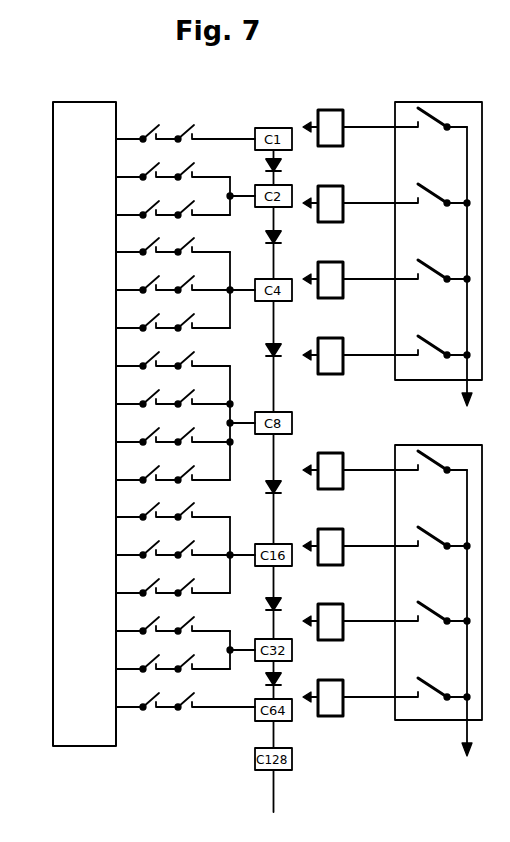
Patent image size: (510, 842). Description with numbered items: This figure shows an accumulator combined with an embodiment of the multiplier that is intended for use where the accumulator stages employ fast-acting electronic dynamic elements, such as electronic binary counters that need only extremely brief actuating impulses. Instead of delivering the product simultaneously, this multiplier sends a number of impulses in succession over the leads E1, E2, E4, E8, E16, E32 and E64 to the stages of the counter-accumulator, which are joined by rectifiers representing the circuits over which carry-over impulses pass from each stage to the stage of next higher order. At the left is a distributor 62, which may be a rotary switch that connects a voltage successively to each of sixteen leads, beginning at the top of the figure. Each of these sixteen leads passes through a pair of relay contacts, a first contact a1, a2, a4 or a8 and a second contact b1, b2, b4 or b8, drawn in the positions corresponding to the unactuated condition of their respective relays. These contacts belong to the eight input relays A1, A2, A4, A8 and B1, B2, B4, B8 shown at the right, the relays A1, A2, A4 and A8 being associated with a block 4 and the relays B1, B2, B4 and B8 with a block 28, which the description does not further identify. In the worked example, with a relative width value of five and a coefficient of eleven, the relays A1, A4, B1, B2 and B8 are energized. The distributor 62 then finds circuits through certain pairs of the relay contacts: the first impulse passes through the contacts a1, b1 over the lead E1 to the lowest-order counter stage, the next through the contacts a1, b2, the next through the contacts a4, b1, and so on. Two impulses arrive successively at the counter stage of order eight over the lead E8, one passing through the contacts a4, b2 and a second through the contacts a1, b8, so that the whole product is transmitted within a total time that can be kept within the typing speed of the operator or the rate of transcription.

The distributor 62 is at (85, 432).
The first switch group (A lines) 4 is at (452, 102).
The second switch group (B lines) 28 is at (465, 445).
The lead E1 is at (223, 138).
The lead E2 is at (239, 193).
The lead E4 is at (257, 283).
The lead E8 is at (251, 414).
The lead E16 is at (244, 545).
The lead E32 is at (246, 644).
The lead E64 is at (208, 707).
The input relay A1 is at (337, 126).
The input relay A2 is at (337, 202).
The input relay A4 is at (337, 278).
The input relay A8 is at (337, 354).
The input relay B1 is at (337, 469).
The input relay B2 is at (337, 545).
The input relay B4 is at (337, 620).
The input relay B8 is at (337, 696).
The relay contacts a1 is at (146, 134).
The relay contacts a2 is at (146, 172).
The relay contacts a4 is at (146, 247).
The relay contacts a8 is at (146, 361).
The relay contacts b1 is at (188, 134).
The relay contacts b2 is at (188, 210).
The relay contacts b4 is at (188, 323).
The relay contacts b8 is at (188, 475).